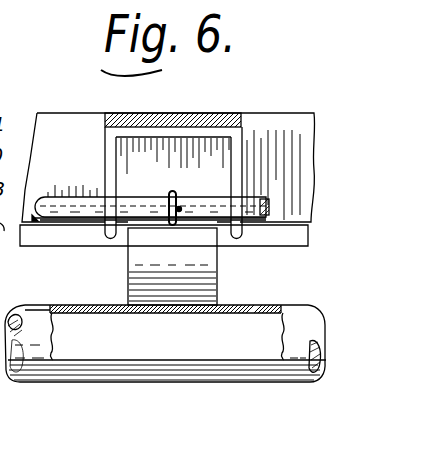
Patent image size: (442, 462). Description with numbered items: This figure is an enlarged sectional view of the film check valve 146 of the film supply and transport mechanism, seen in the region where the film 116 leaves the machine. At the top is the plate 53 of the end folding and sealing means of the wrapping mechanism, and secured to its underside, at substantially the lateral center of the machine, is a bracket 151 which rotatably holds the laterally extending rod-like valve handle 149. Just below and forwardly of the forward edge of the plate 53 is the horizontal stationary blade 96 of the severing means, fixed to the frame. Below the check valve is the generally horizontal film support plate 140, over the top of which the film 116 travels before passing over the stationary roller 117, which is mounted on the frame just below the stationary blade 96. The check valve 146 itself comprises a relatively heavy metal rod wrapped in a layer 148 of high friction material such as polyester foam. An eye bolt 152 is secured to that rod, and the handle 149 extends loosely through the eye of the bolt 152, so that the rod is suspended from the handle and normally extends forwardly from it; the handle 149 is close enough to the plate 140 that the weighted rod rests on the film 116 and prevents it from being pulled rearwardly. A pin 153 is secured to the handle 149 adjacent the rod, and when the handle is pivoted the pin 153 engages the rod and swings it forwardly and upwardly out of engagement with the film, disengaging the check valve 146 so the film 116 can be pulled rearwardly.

The plate 53 is at (224, 114).
The stationary blade 96 is at (310, 231).
The film 116 is at (100, 306).
The stationary roller 117 is at (296, 364).
The film support plate 140 is at (262, 305).
The film check valve 146 is at (150, 266).
The layer of high friction material 148 is at (197, 277).
The valve handle 149 is at (262, 197).
The bracket 151 is at (110, 167).
The eye bolt 152 is at (173, 230).
The pin 153 is at (181, 210).